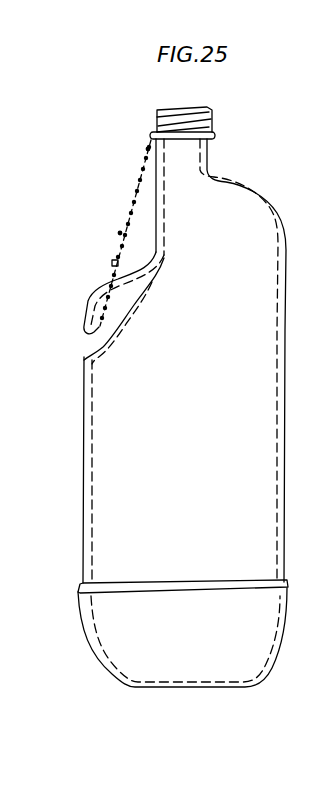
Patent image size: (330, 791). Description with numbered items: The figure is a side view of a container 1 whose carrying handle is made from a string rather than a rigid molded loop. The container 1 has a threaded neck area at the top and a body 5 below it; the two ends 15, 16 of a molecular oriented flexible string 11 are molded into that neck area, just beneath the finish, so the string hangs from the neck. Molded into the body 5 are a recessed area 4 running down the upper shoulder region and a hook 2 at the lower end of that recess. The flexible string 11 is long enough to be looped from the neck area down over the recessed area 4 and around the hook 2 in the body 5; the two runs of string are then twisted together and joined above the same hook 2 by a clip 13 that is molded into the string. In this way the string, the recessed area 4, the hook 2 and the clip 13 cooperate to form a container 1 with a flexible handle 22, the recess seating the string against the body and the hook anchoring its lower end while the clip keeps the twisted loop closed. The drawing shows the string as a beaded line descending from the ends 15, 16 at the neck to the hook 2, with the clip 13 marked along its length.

The container 1 is at (258, 202).
The hook 2 is at (82, 319).
The recessed area 4 is at (156, 214).
The body 5 is at (83, 390).
The flexible string 11 is at (136, 189).
The clip 13 is at (111, 263).
The end of flexible string 15 is at (149, 140).
The end of flexible string 16 is at (146, 148).
The flexible handle 22 is at (119, 232).